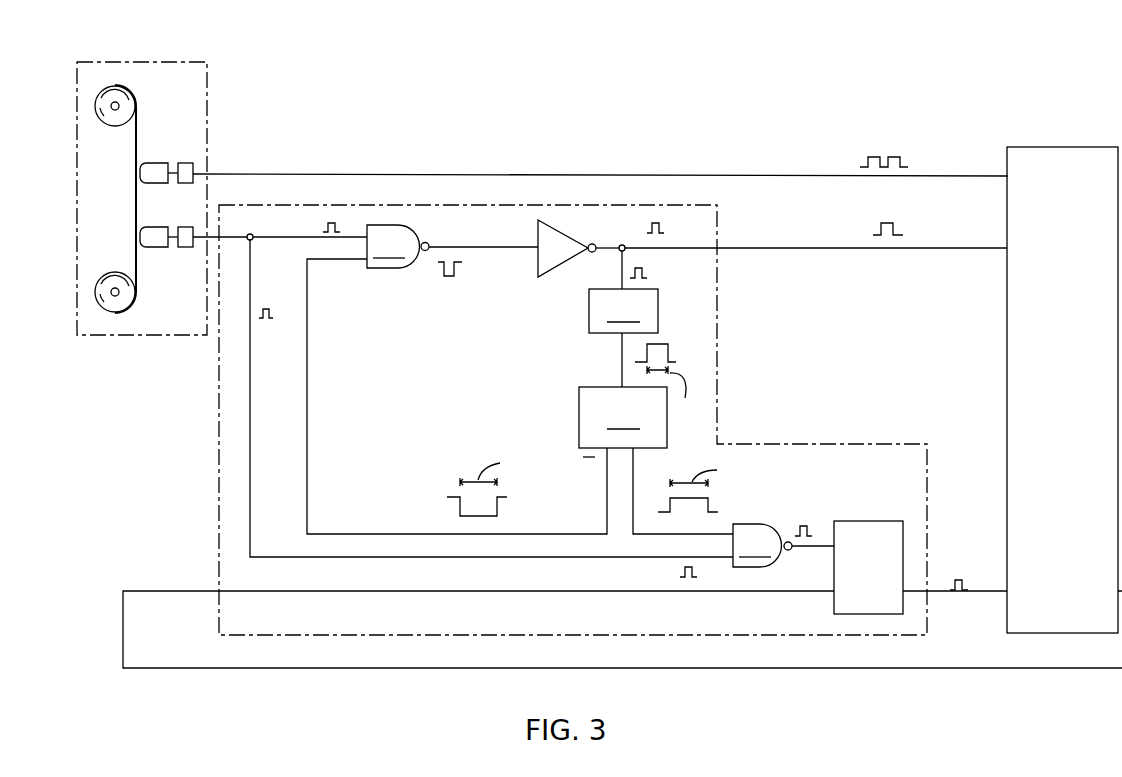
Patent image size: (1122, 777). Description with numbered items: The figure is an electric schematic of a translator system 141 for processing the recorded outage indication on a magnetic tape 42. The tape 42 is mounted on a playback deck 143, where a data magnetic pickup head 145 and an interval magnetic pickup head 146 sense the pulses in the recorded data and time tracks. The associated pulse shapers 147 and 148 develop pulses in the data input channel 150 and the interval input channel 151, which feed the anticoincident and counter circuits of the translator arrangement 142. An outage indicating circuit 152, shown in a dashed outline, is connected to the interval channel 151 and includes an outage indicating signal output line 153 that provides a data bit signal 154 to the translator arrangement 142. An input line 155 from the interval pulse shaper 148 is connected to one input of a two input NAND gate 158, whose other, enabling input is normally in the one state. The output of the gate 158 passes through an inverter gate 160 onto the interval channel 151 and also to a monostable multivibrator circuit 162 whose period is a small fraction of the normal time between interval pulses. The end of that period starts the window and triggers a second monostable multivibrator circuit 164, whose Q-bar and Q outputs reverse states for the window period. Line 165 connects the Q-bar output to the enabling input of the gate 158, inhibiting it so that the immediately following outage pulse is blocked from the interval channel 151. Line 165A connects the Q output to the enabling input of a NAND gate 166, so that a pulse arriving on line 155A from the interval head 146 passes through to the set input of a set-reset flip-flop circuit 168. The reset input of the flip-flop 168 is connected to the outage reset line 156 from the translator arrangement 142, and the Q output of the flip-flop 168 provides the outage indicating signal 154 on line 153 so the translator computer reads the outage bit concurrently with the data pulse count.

The translator system 141 is at (663, 121).
The translator arrangement 142 is at (1074, 464).
The playback deck 143 is at (172, 63).
The magnetic tape 42 is at (136, 193).
The data magnetic pickup head 145 is at (155, 163).
The interval magnetic pickup head 146 is at (155, 227).
The data pulse shaper 147 is at (195, 163).
The interval pulse shaper 148 is at (187, 247).
The data input channel 150 is at (443, 174).
The interval input channel 151 is at (862, 250).
The outage indicating circuit 152 is at (717, 325).
The outage indicating signal output line 153 is at (990, 593).
The outage indicating data bit signal 154 is at (958, 578).
The input line 155 is at (293, 237).
The pulse line 155A is at (250, 432).
The outage reset line 156 is at (175, 591).
The two input NAND gate 158 is at (452, 250).
The inverter gate 160 is at (538, 240).
The monostable multivibrator circuit 162 is at (623, 292).
The second monostable multivibrator circuit 164 is at (645, 405).
The line 165 is at (358, 534).
The line 165A is at (633, 500).
The NAND gate 166 is at (783, 545).
The set-reset flip-flop circuit 168 is at (873, 521).